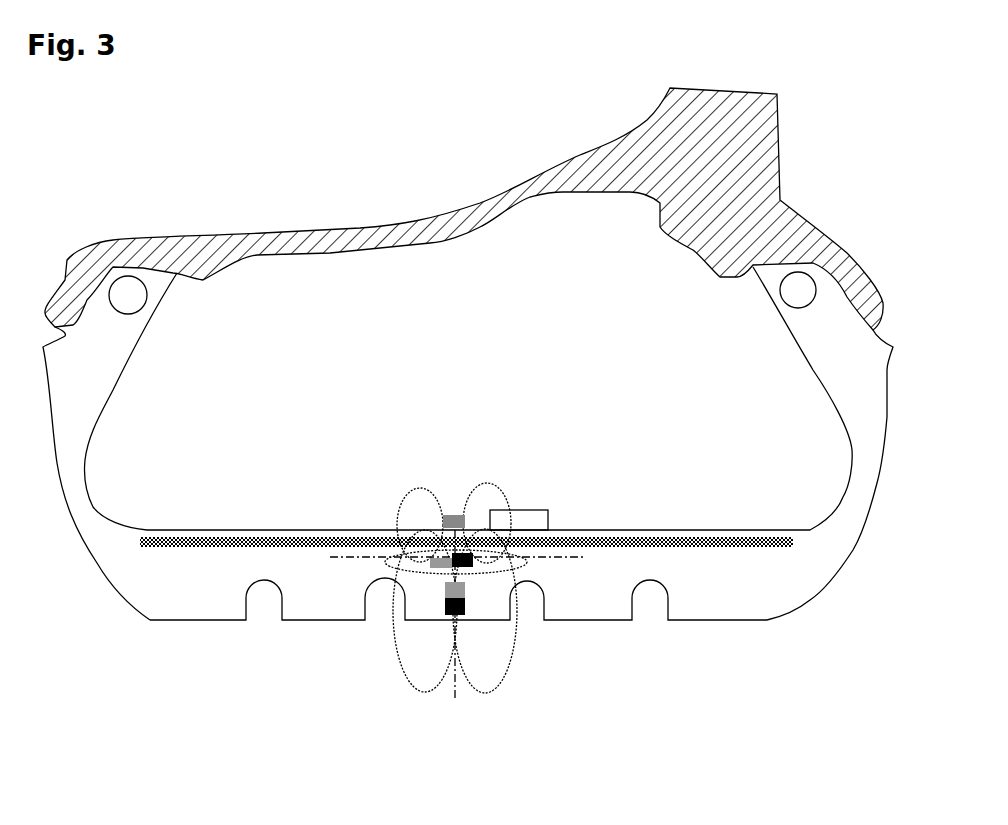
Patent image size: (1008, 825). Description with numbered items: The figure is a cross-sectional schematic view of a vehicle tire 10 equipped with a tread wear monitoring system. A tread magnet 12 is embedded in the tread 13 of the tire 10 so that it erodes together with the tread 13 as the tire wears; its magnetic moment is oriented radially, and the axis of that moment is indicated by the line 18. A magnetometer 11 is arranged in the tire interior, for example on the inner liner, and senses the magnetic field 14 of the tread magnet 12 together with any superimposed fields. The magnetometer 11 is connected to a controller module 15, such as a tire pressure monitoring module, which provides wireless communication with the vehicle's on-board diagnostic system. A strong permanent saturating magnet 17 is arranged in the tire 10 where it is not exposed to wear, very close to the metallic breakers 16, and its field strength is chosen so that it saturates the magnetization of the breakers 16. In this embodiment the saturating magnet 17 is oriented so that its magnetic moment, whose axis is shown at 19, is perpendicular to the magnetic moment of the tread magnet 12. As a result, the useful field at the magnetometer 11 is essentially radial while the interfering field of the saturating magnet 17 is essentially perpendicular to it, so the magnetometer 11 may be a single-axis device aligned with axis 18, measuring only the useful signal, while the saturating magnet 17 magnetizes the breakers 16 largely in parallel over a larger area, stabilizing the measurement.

The tire 10 is at (92, 557).
The magnetometer 11 is at (455, 513).
The tread magnet 12 is at (443, 598).
The tread 13 is at (587, 608).
The magnetic field 14 is at (417, 497).
The electronic unit housing 15 is at (548, 512).
The breakers 16 is at (677, 537).
The saturating magnet 17 is at (473, 573).
The axis of the magnetic moment of the tread magnet 18 is at (457, 680).
The axis of the magnetic moment of the saturating magnet 19 is at (583, 558).